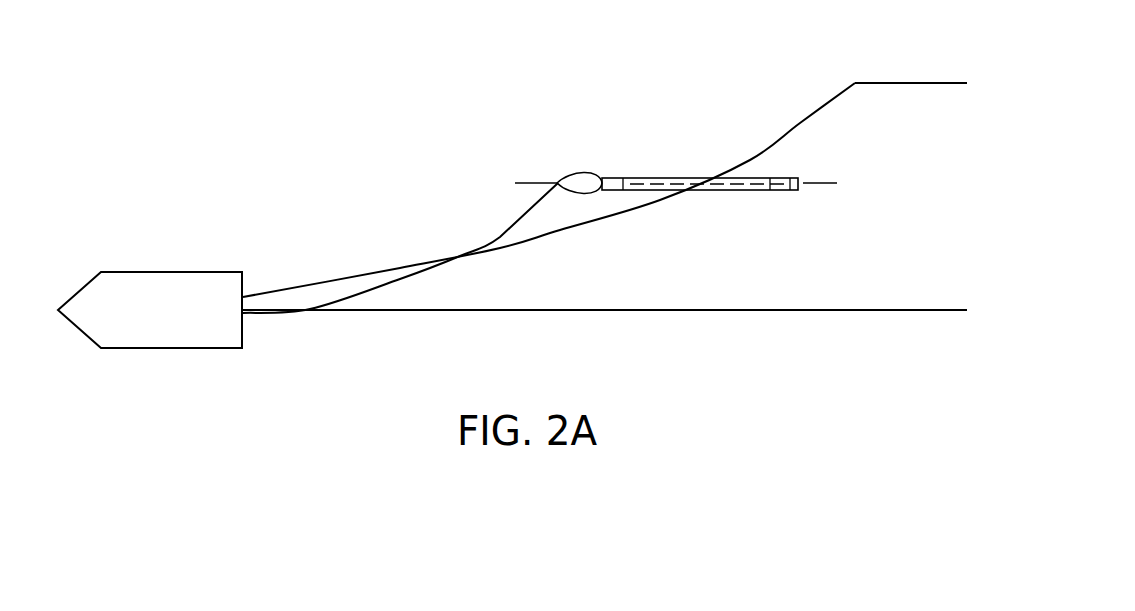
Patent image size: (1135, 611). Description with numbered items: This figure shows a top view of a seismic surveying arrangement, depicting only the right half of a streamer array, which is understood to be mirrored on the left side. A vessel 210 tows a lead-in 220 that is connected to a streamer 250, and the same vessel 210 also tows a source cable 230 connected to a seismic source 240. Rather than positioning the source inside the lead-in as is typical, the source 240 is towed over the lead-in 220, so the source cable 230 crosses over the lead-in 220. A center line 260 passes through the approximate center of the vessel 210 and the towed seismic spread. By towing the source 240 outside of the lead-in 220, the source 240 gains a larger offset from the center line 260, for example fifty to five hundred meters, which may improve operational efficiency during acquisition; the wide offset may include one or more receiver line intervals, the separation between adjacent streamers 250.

The vessel 210 is at (166, 272).
The lead-in 220 is at (587, 224).
The source cable 230 is at (503, 227).
The seismic source 240 is at (668, 178).
The streamer 250 is at (908, 83).
The center line 260 is at (853, 310).